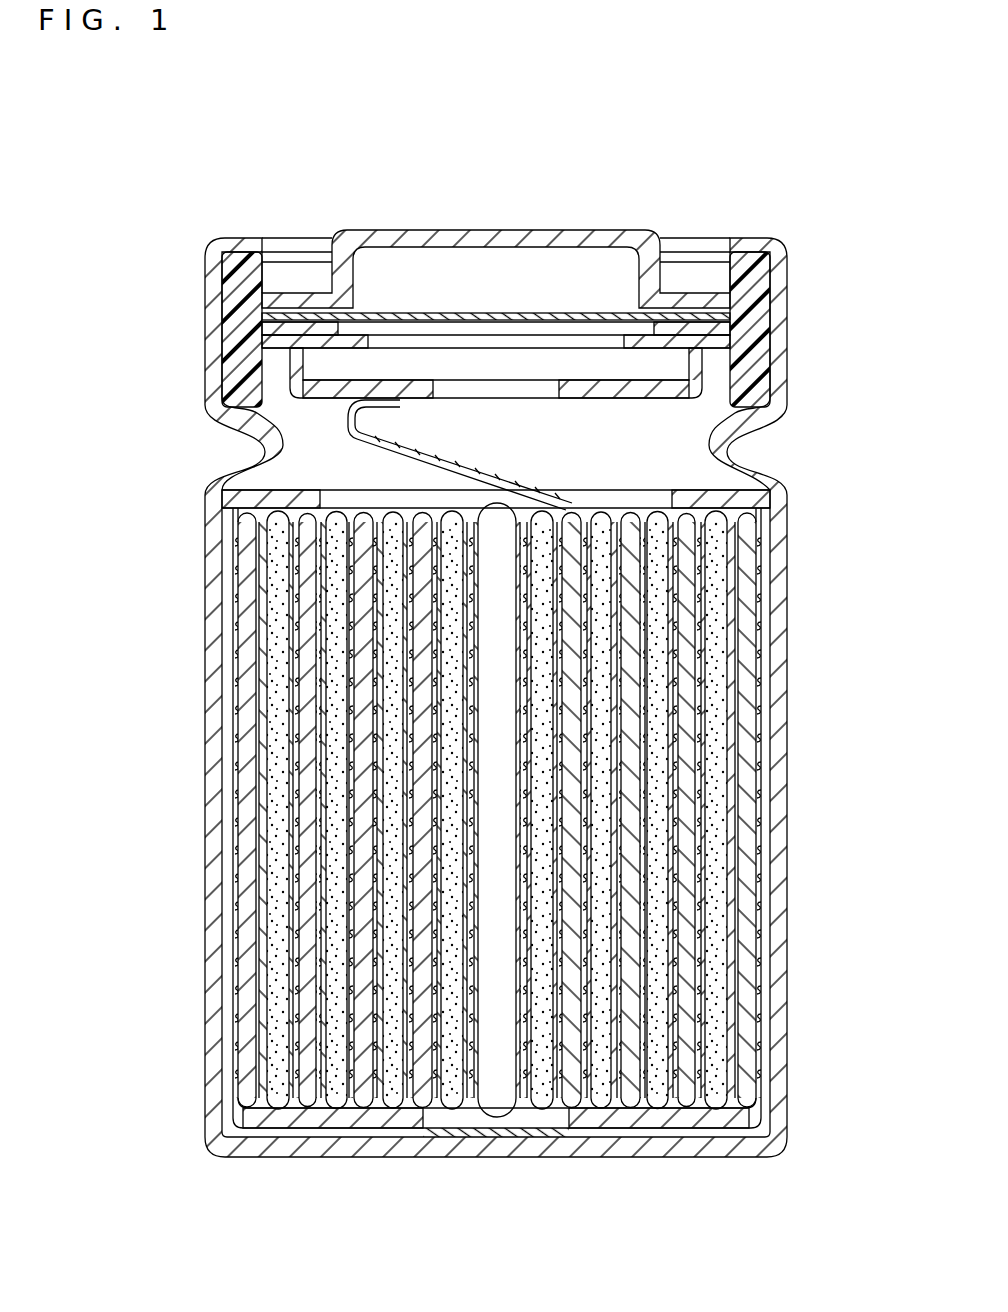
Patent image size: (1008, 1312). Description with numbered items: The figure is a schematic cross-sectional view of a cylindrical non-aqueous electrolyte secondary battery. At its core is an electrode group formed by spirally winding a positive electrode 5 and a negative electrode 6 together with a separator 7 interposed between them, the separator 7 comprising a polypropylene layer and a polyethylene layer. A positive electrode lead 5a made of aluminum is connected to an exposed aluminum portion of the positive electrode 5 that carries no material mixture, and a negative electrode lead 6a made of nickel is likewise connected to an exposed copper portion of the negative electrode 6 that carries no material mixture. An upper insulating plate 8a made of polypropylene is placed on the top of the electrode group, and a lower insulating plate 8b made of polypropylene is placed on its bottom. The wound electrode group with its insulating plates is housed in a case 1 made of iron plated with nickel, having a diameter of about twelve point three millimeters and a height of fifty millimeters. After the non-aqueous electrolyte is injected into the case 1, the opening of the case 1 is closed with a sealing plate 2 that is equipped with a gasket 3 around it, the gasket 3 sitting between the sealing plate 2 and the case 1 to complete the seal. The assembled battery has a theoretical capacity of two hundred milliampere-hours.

The case 1 is at (210, 672).
The sealing plate 2 is at (403, 237).
The gasket 3 is at (748, 318).
The positive electrode 5 is at (713, 908).
The positive electrode lead 5a is at (548, 488).
The negative electrode 6 is at (745, 848).
The negative electrode lead 6a is at (548, 1137).
The separator 7 is at (768, 732).
The upper insulating plate 8a is at (747, 503).
The lower insulating plate 8b is at (752, 1120).